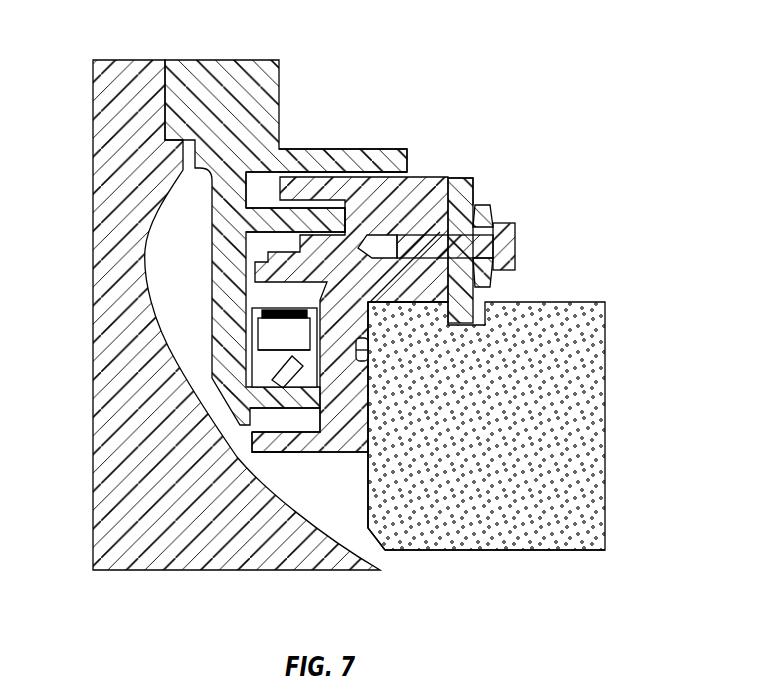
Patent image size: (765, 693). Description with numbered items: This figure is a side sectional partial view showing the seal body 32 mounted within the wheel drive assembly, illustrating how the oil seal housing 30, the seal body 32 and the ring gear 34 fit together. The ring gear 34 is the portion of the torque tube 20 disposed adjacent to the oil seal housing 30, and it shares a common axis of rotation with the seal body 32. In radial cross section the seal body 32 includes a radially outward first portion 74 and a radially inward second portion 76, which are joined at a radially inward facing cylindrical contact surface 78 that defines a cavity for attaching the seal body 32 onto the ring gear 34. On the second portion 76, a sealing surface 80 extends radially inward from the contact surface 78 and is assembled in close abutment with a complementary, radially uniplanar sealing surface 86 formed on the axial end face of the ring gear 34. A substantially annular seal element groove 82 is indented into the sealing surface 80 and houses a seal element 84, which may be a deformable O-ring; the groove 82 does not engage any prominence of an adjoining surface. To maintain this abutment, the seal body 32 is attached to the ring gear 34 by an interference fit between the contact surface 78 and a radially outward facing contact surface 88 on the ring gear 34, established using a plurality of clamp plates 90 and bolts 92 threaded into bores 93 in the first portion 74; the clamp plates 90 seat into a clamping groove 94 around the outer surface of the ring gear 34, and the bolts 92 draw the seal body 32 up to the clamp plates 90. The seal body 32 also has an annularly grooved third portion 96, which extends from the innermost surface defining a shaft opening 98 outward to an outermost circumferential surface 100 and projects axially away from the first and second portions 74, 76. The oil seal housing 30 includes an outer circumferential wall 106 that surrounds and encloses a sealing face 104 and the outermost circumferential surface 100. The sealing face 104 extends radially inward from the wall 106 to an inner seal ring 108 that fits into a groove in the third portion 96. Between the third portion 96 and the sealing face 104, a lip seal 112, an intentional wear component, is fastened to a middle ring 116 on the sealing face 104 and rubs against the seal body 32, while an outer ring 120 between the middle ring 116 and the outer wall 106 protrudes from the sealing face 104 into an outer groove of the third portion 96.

The torque tube 20 is at (630, 322).
The oil seal housing 30 is at (283, 47).
The seal body 32 is at (461, 155).
The ring gear 34 is at (563, 550).
The first portion 74 is at (430, 195).
The second portion 76 is at (343, 436).
The contact surface 78 is at (380, 303).
The sealing surface 80 is at (369, 387).
The seal element groove 82 is at (362, 338).
The seal element 84 is at (369, 350).
The sealing surface 86 is at (368, 510).
The contact surface 88 is at (418, 295).
The clamp plates 90 is at (460, 178).
The bolts 92 is at (517, 245).
The bores 93 is at (408, 235).
The clamping groove 94 is at (478, 300).
The third portion 96 is at (302, 347).
The shaft opening 98 is at (277, 457).
The outermost circumferential surface 100 is at (331, 177).
The sealing face 104 is at (240, 168).
The outer circumferential wall 106 is at (295, 150).
The inner seal ring 108 is at (262, 418).
The lip seal 112 is at (256, 330).
The middle ring 116 is at (256, 305).
The outer ring 120 is at (262, 222).